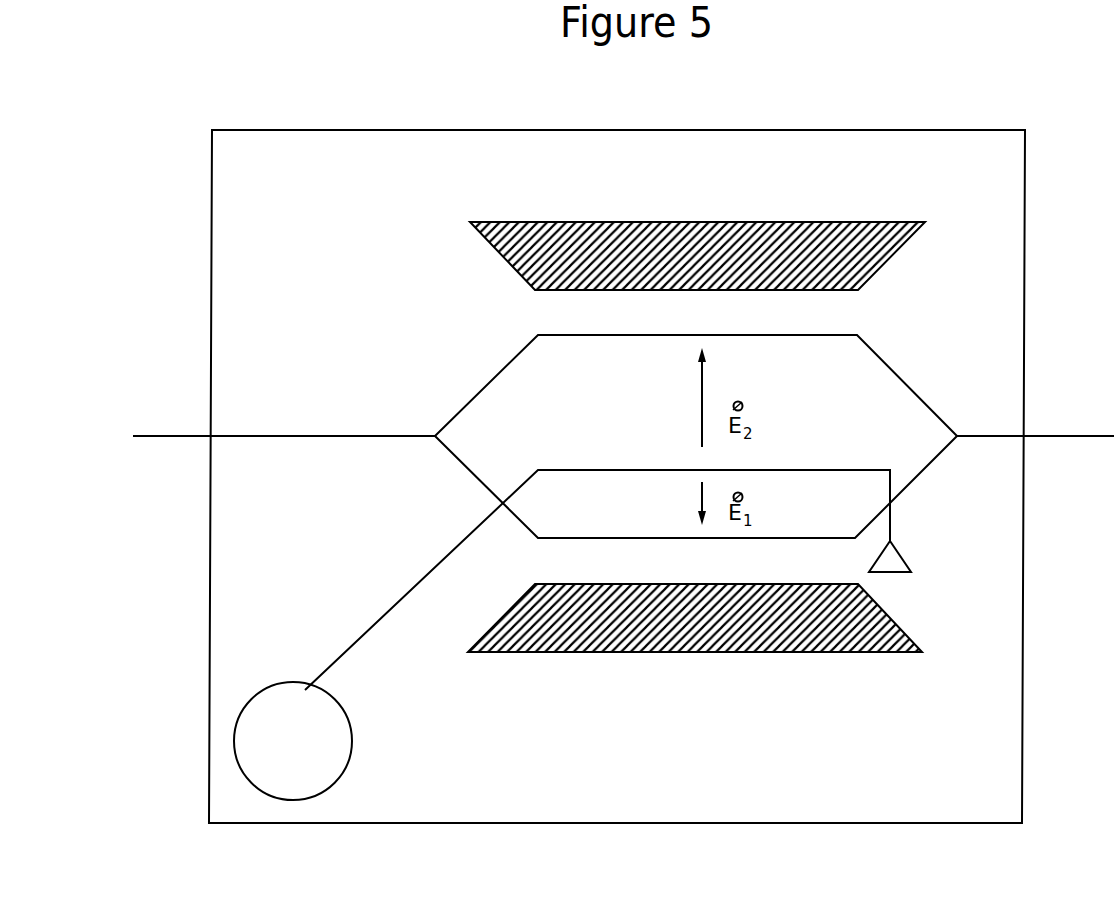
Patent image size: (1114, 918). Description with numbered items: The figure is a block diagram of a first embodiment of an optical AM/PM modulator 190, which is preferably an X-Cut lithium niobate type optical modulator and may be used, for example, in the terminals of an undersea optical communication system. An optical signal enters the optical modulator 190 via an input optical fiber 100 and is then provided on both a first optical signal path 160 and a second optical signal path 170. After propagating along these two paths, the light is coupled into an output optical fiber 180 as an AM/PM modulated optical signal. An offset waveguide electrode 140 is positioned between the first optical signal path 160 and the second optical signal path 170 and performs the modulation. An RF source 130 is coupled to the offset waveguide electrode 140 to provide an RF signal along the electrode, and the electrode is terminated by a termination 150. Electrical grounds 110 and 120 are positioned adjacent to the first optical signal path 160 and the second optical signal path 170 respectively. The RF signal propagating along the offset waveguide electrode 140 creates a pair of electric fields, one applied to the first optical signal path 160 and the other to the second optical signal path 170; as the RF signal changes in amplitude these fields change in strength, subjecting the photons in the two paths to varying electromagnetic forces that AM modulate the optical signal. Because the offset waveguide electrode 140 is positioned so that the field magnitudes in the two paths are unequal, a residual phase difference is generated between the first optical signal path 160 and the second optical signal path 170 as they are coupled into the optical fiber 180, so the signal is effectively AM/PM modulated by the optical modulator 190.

The optical fiber 100 is at (165, 424).
The electrical ground 110 is at (486, 244).
The electrical ground 120 is at (621, 655).
The RF source 130 is at (243, 703).
The offset waveguide electrode 140 is at (850, 466).
The termination 150 is at (917, 563).
The first optical signal path 160 is at (487, 378).
The second optical signal path 170 is at (471, 482).
The optical fiber 180 is at (1049, 433).
The optical AM/PM modulator 190 is at (1029, 190).